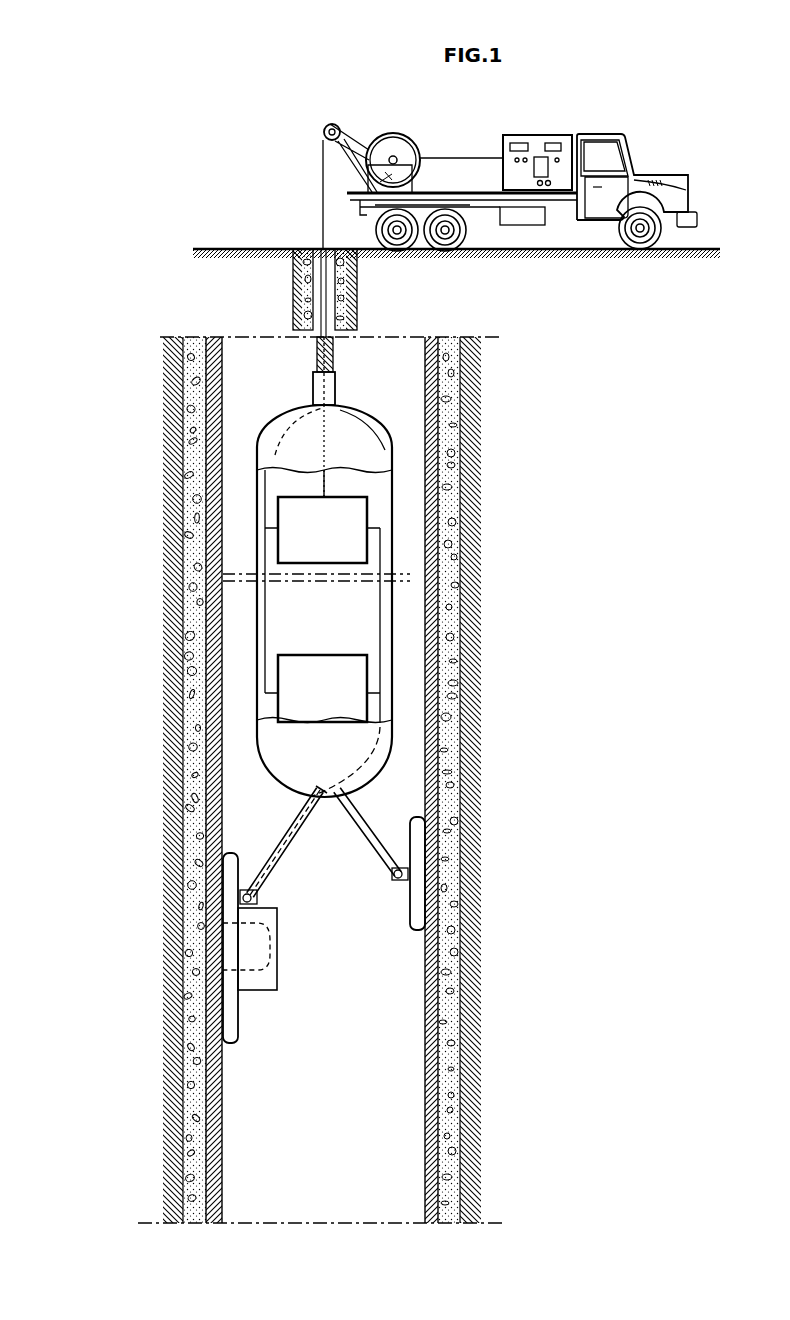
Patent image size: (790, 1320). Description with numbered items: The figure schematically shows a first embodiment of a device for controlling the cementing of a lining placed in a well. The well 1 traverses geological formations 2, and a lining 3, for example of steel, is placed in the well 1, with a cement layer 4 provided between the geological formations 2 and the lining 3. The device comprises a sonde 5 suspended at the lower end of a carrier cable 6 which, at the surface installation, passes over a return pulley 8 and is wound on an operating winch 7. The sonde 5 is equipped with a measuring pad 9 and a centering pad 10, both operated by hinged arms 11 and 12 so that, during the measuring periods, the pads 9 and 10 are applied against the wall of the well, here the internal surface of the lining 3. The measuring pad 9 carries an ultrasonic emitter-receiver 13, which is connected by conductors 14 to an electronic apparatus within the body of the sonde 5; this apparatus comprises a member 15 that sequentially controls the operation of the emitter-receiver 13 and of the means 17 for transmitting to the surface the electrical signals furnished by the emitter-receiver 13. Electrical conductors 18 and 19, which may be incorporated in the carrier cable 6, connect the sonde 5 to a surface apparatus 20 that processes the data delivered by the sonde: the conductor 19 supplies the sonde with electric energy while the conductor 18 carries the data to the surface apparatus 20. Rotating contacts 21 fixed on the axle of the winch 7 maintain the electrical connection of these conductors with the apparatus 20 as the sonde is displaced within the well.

The well 1 is at (305, 539).
The geological formations 2 is at (468, 337).
The lining 3 is at (430, 337).
The cement layer 4 is at (452, 337).
The sonde 5 is at (250, 430).
The carrier cable 6 is at (317, 365).
The operating winch 7 is at (393, 133).
The return pulley 8 is at (332, 124).
The measuring pad 9 is at (230, 877).
The centering pad 10 is at (418, 853).
The hinged arm 11 is at (290, 828).
The hinged arm 12 is at (410, 800).
The ultrasonic emitter-receiver 13 is at (250, 950).
The conductors 14 is at (310, 796).
The control member 15 is at (358, 678).
The transmitting means 17 is at (353, 508).
The electrical conductor 18 is at (325, 480).
The electrical conductor 19 is at (265, 480).
The surface apparatus 20 is at (505, 137).
The rotating contacts 21 is at (398, 157).